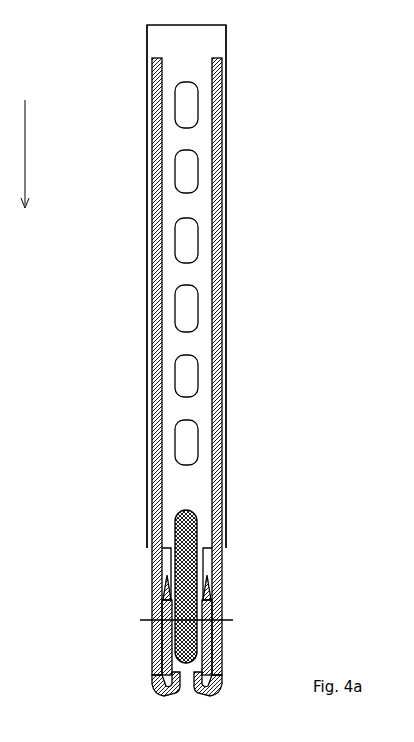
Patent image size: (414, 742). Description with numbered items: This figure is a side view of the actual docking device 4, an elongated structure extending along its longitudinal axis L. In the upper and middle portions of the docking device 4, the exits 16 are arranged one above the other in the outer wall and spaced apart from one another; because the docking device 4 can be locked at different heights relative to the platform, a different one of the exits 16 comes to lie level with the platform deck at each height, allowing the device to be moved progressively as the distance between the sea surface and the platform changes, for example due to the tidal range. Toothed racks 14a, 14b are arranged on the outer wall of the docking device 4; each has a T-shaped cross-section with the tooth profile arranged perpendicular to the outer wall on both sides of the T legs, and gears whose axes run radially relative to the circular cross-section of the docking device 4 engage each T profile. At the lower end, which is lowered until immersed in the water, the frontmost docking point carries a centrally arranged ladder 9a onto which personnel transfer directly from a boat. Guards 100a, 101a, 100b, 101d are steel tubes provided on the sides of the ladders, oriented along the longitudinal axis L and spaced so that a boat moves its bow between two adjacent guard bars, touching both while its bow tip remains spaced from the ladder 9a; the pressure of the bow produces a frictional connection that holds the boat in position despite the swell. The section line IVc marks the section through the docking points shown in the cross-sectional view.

The longitudinal axis L is at (24, 144).
The docking device 4 is at (170, 180).
The toothed rack 14a is at (147, 240).
The toothed rack 14b is at (227, 228).
The ladder 9a is at (223, 520).
The exits 16 is at (197, 102).
The guard 100a is at (152, 632).
The guard 100b is at (222, 663).
The guard 101a is at (209, 697).
The guard 101d is at (152, 676).
The section line IVc is at (147, 606).